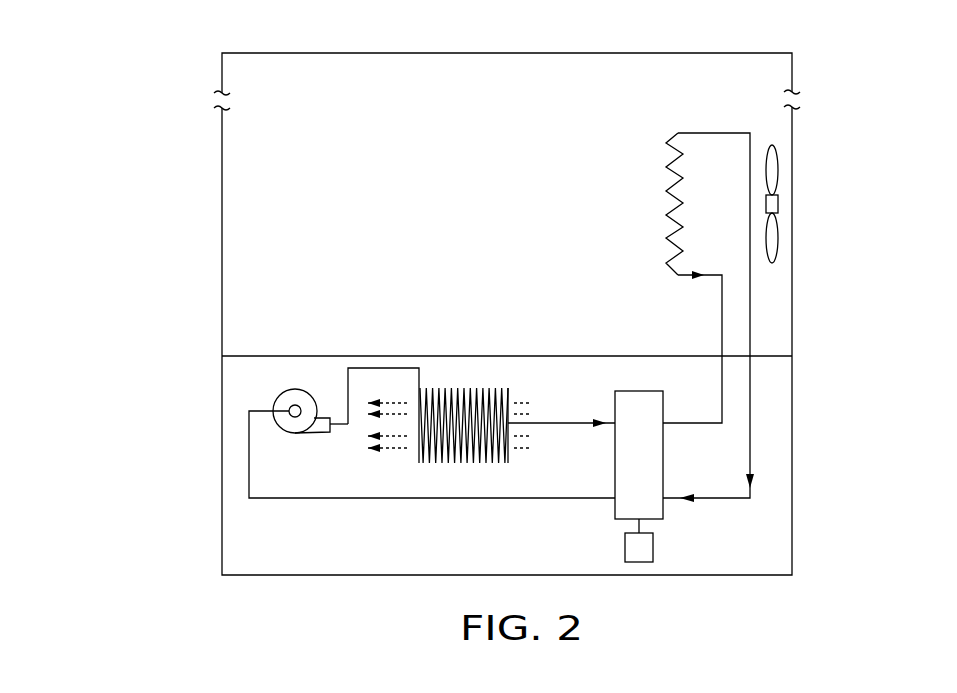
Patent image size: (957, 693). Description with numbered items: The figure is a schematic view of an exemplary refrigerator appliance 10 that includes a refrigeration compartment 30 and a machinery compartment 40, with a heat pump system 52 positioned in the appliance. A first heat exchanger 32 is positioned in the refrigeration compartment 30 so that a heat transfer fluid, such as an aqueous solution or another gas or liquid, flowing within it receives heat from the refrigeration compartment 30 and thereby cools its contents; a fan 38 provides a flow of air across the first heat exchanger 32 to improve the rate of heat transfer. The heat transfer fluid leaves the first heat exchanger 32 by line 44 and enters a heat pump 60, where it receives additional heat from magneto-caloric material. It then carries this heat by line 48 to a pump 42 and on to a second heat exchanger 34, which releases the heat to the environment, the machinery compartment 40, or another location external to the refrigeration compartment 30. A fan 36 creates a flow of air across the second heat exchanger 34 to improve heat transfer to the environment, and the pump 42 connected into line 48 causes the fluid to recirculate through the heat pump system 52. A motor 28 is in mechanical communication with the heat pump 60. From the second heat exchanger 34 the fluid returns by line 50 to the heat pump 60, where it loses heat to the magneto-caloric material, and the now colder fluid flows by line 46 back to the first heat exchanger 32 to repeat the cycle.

The refrigerator appliance 10 is at (115, 110).
The motor 28 is at (625, 545).
The refrigeration compartment 30 is at (502, 90).
The first heat exchanger 32 is at (668, 173).
The second heat exchanger 34 is at (482, 387).
The fan 36 is at (400, 402).
The fan 38 is at (778, 175).
The machinery compartment 40 is at (252, 385).
The pump 42 is at (281, 396).
The line 44 is at (750, 312).
The line 46 is at (722, 323).
The line 48 is at (352, 368).
The line 50 is at (555, 423).
The heat pump system 52 is at (434, 338).
The heat pump 60 is at (638, 391).